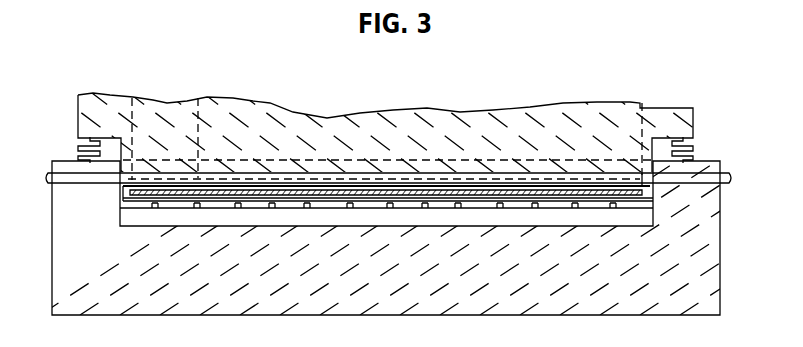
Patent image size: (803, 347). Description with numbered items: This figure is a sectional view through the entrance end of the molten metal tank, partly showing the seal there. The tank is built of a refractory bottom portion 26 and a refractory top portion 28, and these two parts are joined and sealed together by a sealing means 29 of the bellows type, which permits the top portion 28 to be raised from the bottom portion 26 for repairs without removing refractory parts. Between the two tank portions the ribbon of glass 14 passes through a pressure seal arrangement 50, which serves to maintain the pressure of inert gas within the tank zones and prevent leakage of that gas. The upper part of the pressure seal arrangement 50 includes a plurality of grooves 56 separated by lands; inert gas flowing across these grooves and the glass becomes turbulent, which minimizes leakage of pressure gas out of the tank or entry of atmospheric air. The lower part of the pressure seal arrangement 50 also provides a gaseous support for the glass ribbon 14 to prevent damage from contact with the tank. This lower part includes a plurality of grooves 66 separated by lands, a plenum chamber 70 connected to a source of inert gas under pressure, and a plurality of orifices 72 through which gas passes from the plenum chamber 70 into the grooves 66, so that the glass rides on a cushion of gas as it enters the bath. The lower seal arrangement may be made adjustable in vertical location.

The ribbon of glass 14 is at (521, 196).
The refractory bottom portion 26 is at (52, 297).
The refractory top portion 28 is at (78, 113).
The sealing means 29 is at (78, 147).
The pressure seal arrangement 50 is at (128, 188).
The grooves 56 is at (192, 176).
The grooves 66 is at (648, 201).
The plenum chamber 70 is at (120, 218).
The orifices 72 is at (307, 208).